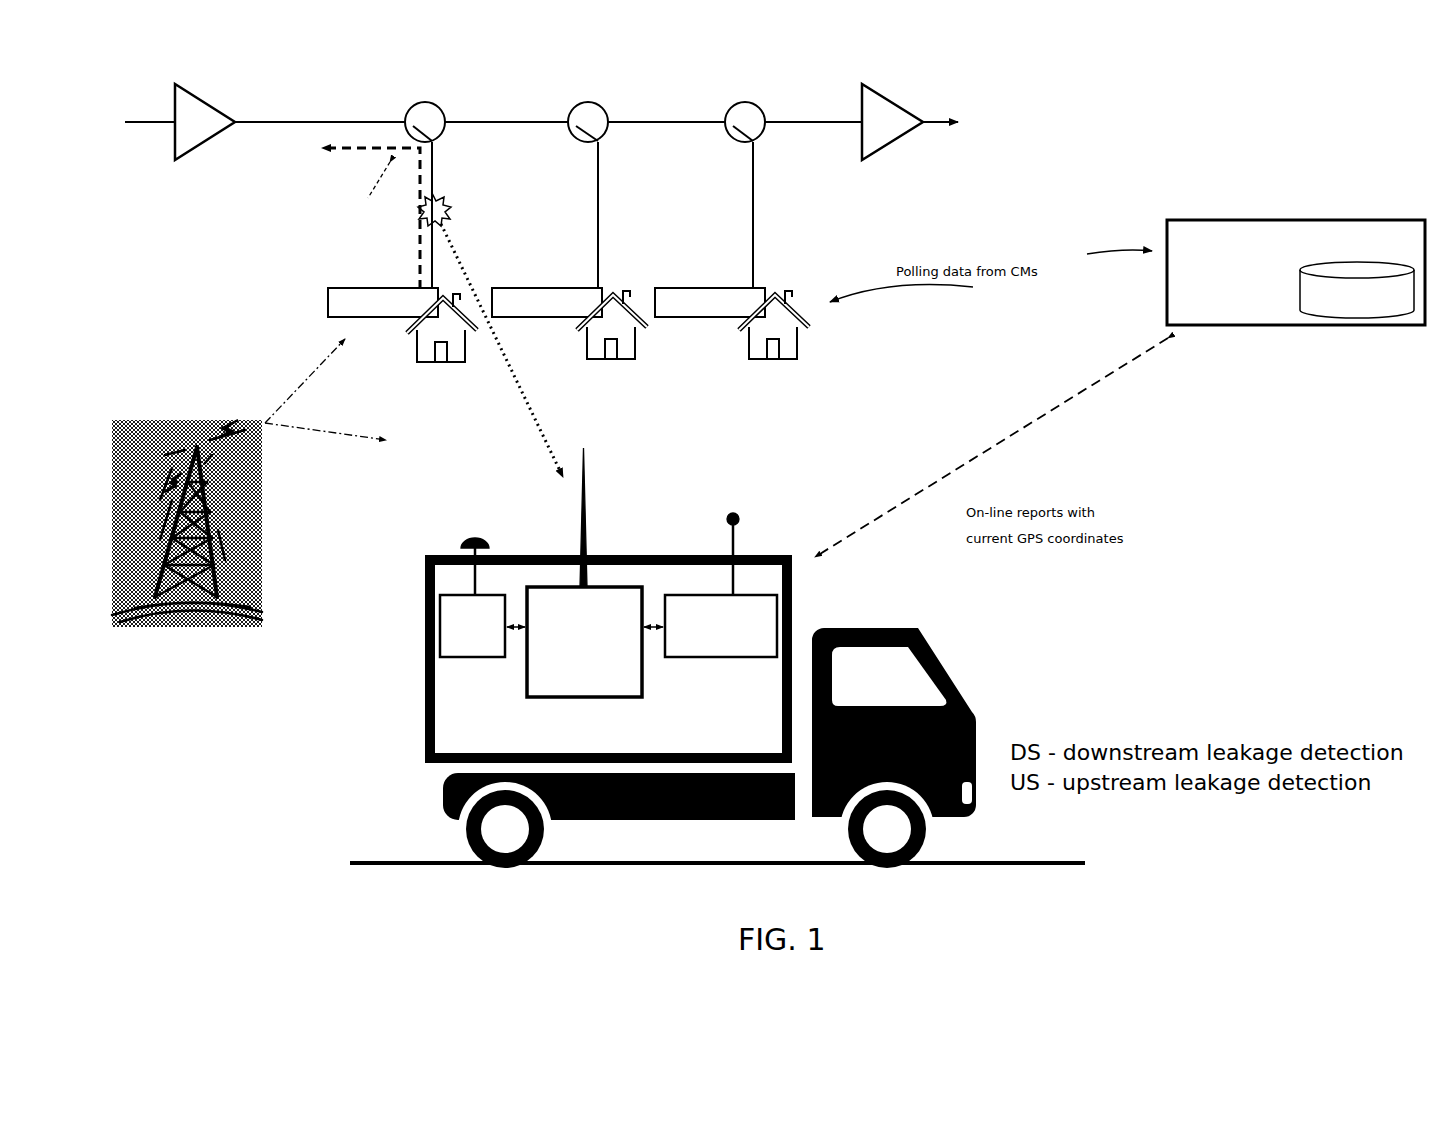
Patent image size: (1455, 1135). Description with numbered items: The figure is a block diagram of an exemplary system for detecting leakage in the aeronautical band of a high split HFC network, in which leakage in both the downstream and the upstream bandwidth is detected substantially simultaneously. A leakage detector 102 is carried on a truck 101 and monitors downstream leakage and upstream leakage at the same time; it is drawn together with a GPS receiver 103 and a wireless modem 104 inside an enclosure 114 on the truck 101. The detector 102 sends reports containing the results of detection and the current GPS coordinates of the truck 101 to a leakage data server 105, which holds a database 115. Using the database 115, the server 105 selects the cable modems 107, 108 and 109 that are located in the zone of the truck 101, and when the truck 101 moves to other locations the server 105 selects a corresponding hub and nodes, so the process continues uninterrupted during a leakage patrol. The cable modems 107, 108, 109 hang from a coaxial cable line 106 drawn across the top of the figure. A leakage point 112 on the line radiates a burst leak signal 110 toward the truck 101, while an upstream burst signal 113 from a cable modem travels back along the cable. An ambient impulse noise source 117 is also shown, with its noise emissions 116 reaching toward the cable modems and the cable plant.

The truck 101 is at (967, 700).
The leakage detector 102 is at (644, 677).
The GPS receiver 103 is at (475, 660).
The wireless modem 104 is at (697, 658).
The leakage data server 105 is at (1397, 218).
The coaxial cable network trunk 106 is at (270, 110).
The CM 107 is at (322, 312).
The CM 108 is at (570, 287).
The CM 109 is at (710, 287).
The burst leak signal 110 is at (525, 430).
The leakage point 112 is at (449, 210).
The upstream burst signal from cable modem 113 is at (275, 228).
The leakage detection unit enclosure 114 is at (445, 723).
The database 115 is at (1402, 318).
The ambient impulse noise propagation 116 is at (307, 443).
The source of ambient impulse noise 117 is at (167, 690).